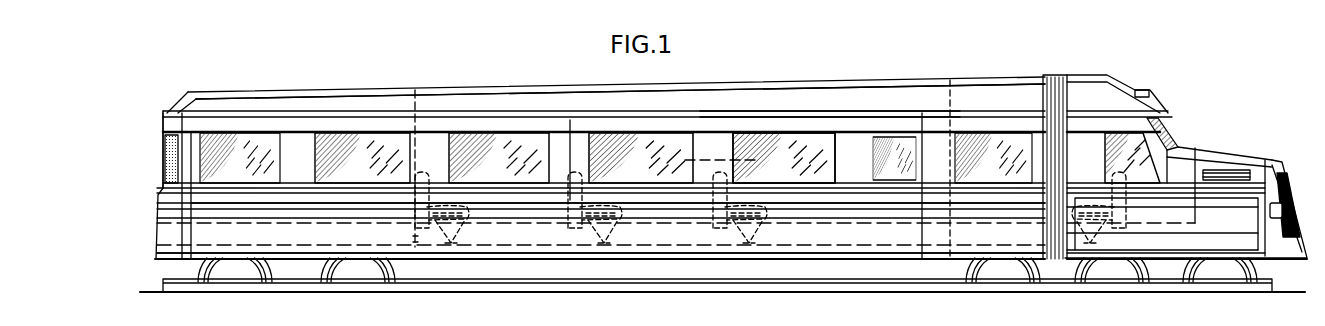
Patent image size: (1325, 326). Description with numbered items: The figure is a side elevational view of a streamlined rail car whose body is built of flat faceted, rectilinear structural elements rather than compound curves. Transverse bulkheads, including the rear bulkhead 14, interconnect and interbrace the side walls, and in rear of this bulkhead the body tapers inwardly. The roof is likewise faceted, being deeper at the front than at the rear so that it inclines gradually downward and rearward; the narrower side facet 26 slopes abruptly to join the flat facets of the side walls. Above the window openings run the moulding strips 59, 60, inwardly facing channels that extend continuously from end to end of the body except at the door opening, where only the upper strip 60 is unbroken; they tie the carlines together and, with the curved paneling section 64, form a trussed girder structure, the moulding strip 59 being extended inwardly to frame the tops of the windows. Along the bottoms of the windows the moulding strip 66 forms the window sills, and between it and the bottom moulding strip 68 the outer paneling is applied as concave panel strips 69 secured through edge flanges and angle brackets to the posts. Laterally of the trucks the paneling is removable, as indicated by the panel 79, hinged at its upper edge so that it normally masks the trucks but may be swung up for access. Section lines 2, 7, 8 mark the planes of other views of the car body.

The section line 2- 2 is at (245, 150).
The section line 7- 7 is at (720, 161).
The section line 8- 8 is at (560, 130).
The rear bulkhead 14 is at (416, 102).
The side facet of roof 26 is at (524, 102).
The moulding strip 59 is at (744, 132).
The upper moulding strip 60 is at (836, 114).
The curved paneling section 64 is at (276, 122).
The window sill moulding strip 66 is at (799, 192).
The bottom moulding strip 68 is at (603, 262).
The concave panel strips 69 is at (481, 222).
The removable panel 79 is at (317, 252).